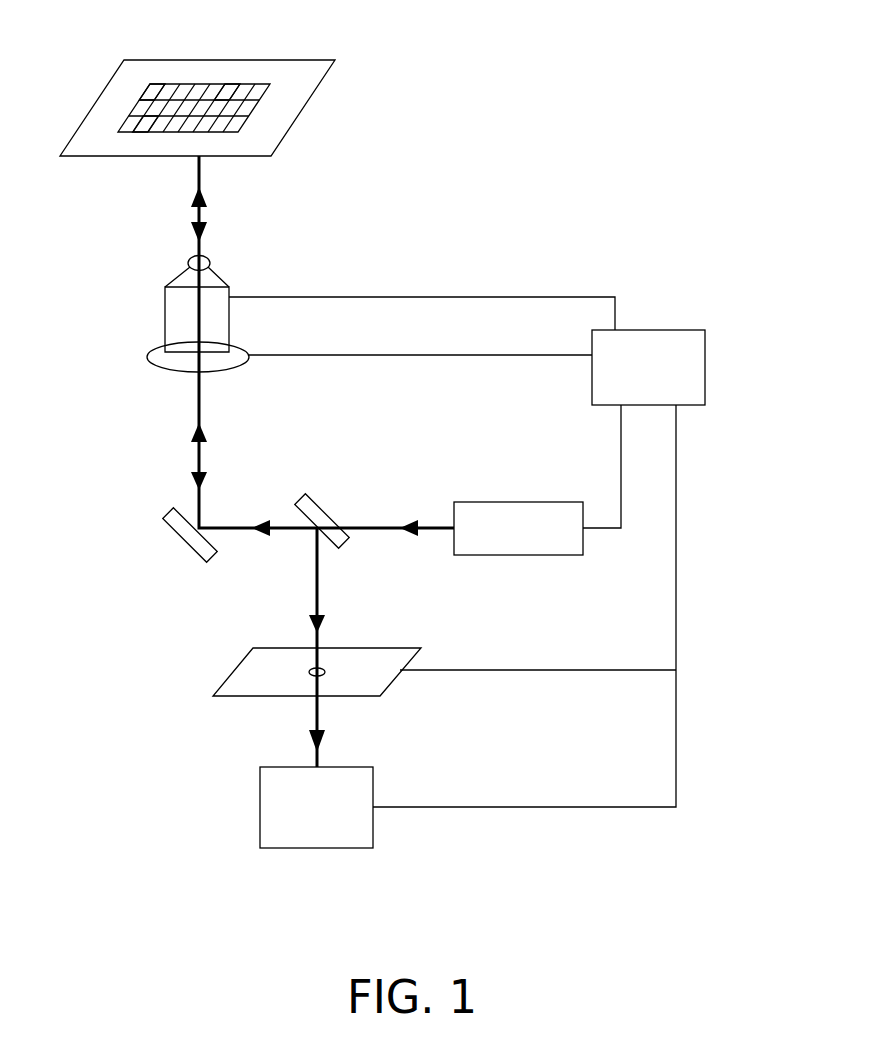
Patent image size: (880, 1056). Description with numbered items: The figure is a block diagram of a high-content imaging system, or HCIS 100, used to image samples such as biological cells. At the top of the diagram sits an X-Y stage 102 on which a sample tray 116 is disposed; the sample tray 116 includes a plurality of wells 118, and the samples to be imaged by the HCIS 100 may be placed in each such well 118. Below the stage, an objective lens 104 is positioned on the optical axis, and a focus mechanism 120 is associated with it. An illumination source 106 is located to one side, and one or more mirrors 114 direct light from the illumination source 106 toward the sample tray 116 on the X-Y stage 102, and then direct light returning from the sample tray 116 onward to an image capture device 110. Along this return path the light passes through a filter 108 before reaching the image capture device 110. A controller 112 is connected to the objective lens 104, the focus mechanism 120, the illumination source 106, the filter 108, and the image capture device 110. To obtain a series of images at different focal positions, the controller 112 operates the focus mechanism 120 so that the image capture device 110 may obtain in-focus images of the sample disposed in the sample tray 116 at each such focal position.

The HCIS 100 is at (586, 113).
The X-Y stage 102 is at (320, 85).
The objective lens 104 is at (178, 305).
The illumination source 106 is at (497, 502).
The filter 108 is at (370, 648).
The image capture device 110 is at (260, 790).
The controller 112 is at (705, 365).
The mirror 114 is at (310, 507).
The sample tray 116 is at (247, 123).
The well 118 is at (155, 92).
The focus mechanism 120 is at (160, 357).